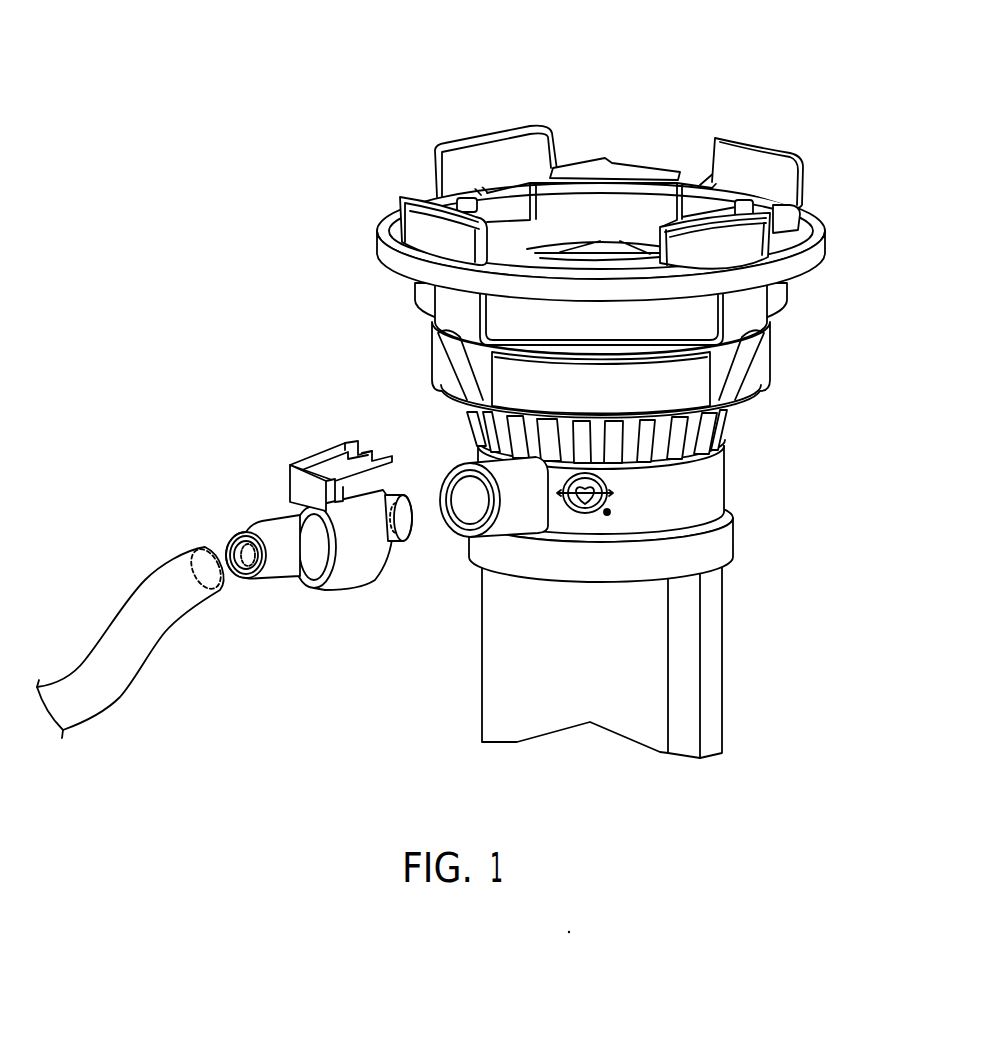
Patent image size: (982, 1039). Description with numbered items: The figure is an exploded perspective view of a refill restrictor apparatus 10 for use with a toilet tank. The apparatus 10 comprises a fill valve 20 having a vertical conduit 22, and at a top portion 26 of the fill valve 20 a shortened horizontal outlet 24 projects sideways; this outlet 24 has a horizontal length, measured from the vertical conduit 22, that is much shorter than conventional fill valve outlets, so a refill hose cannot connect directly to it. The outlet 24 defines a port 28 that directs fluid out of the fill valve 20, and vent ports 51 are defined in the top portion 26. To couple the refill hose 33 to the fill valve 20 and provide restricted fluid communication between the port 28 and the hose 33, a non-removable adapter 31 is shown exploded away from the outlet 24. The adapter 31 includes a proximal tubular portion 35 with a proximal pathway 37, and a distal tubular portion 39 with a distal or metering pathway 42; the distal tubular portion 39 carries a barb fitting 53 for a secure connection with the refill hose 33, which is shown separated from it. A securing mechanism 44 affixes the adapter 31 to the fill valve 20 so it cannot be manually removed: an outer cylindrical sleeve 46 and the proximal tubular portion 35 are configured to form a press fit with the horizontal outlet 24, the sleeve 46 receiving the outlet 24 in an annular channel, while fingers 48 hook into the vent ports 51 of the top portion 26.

The refill restrictor apparatus 10 is at (452, 73).
The fill valve 20 is at (737, 90).
The vertical conduit 22 is at (498, 653).
The horizontal outlet 24 is at (477, 467).
The top portion 26 is at (372, 305).
The port 28 is at (467, 533).
The adapter 31 is at (267, 418).
The refill hose 33 is at (110, 620).
The proximal tubular portion 35 is at (396, 547).
The proximal pathway 37 is at (396, 516).
The distal tubular portion 39 is at (307, 558).
The distal pathway 42 is at (235, 541).
The securing mechanism 44 is at (368, 427).
The outer cylindrical sleeve 46 is at (358, 573).
The fingers 48 is at (390, 472).
The vent ports 51 is at (602, 435).
The barb fitting 53 is at (272, 567).